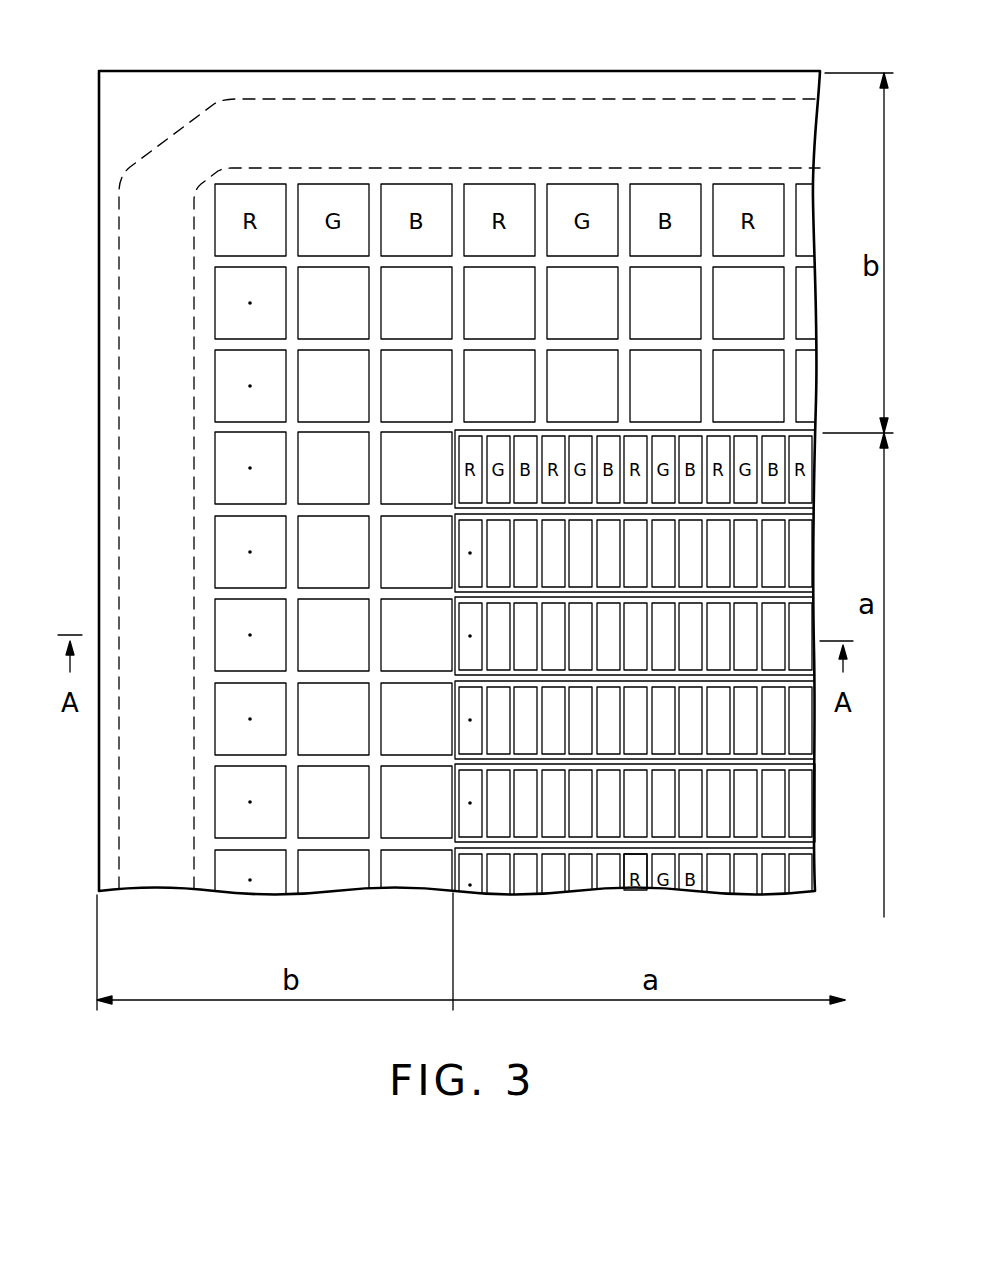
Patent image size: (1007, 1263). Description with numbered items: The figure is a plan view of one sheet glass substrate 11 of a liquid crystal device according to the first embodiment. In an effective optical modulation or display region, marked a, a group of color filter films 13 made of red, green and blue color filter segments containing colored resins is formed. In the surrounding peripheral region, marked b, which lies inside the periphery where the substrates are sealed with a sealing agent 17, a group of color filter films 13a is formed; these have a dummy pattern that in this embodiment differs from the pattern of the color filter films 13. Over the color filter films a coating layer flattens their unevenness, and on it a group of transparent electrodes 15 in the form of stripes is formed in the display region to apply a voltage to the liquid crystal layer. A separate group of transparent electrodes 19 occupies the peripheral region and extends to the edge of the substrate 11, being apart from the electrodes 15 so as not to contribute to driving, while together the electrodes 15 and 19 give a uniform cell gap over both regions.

The substrate 11 is at (557, 70).
The group of color filter films 13 is at (633, 890).
The group of color filter films 13a is at (647, 200).
The group of transparent electrodes 15 is at (823, 765).
The sealing agent 17 is at (376, 155).
The group of transparent electrodes 19 is at (172, 95).